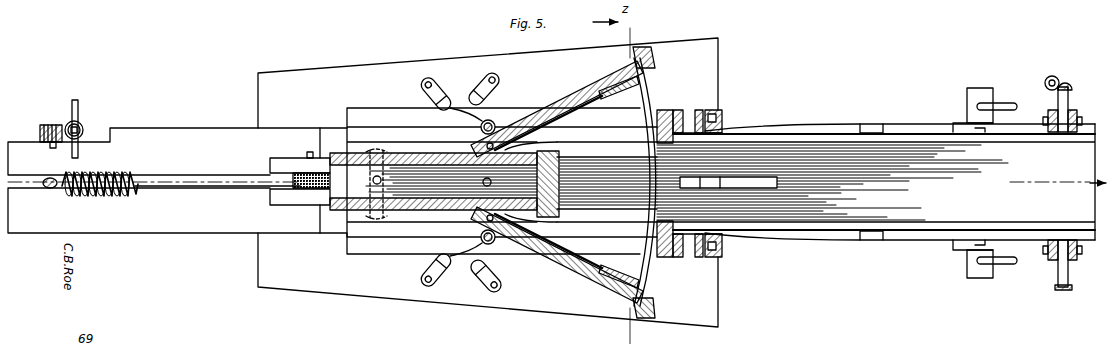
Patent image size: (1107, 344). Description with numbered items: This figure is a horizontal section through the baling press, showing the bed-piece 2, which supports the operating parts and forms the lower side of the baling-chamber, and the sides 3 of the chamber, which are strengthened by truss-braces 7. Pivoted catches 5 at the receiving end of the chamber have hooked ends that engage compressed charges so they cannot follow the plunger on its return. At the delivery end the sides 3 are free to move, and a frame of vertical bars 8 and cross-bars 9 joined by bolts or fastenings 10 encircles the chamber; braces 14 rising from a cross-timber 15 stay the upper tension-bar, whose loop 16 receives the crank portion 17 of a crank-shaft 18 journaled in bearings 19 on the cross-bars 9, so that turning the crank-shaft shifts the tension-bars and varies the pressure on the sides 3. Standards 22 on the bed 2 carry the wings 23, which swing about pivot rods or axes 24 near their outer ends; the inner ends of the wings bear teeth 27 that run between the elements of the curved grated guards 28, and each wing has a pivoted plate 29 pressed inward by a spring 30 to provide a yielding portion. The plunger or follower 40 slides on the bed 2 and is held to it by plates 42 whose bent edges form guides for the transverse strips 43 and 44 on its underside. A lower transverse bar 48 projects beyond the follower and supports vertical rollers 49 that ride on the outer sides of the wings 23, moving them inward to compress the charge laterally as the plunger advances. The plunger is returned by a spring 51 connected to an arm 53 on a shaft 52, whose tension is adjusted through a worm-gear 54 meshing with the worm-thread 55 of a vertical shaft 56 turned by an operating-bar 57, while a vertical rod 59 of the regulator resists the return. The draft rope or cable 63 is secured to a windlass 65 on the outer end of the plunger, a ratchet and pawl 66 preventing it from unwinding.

The bed-piece 2 is at (551, 182).
The sides 3 is at (904, 135).
The pivoted catches 5 is at (703, 137).
The truss-braces 7 is at (836, 128).
The vertical bars 8 is at (1082, 120).
The cross-bars 9 is at (1058, 100).
The bolts or fastenings 10 is at (1046, 124).
The braces 14 is at (1002, 104).
The cross-timber 15 is at (981, 95).
The loop 16 is at (1055, 78).
The crank portion 17 is at (1050, 80).
The crank-shaft 18 is at (1068, 84).
The bearings 19 is at (1072, 89).
The standards 22 is at (460, 182).
The wings 23 is at (553, 112).
The pivot rods or axes 24 is at (486, 144).
The teeth 27 is at (651, 66).
The guards 28 is at (653, 96).
The plate 29 is at (613, 98).
The spring 30 is at (483, 183).
The plunger or follower 40 is at (444, 180).
The plates 42 is at (502, 181).
The transverse strip 43 is at (383, 151).
The transverse strip 44 is at (526, 146).
The lower transverse bar 48 is at (466, 181).
The vertical rollers 49 is at (496, 122).
The spring 51 is at (118, 173).
The shaft 52 is at (40, 133).
The arm 53 is at (50, 178).
The worm-gear 54 is at (55, 118).
The worm-thread 55 is at (83, 125).
The vertical shaft 56 is at (82, 132).
The operating-bar 57 is at (78, 112).
The vertical rod 59 is at (382, 183).
The draft rope or cable 63 is at (305, 170).
The windlass 65 is at (293, 182).
The ratchet and pawl 66 is at (313, 194).